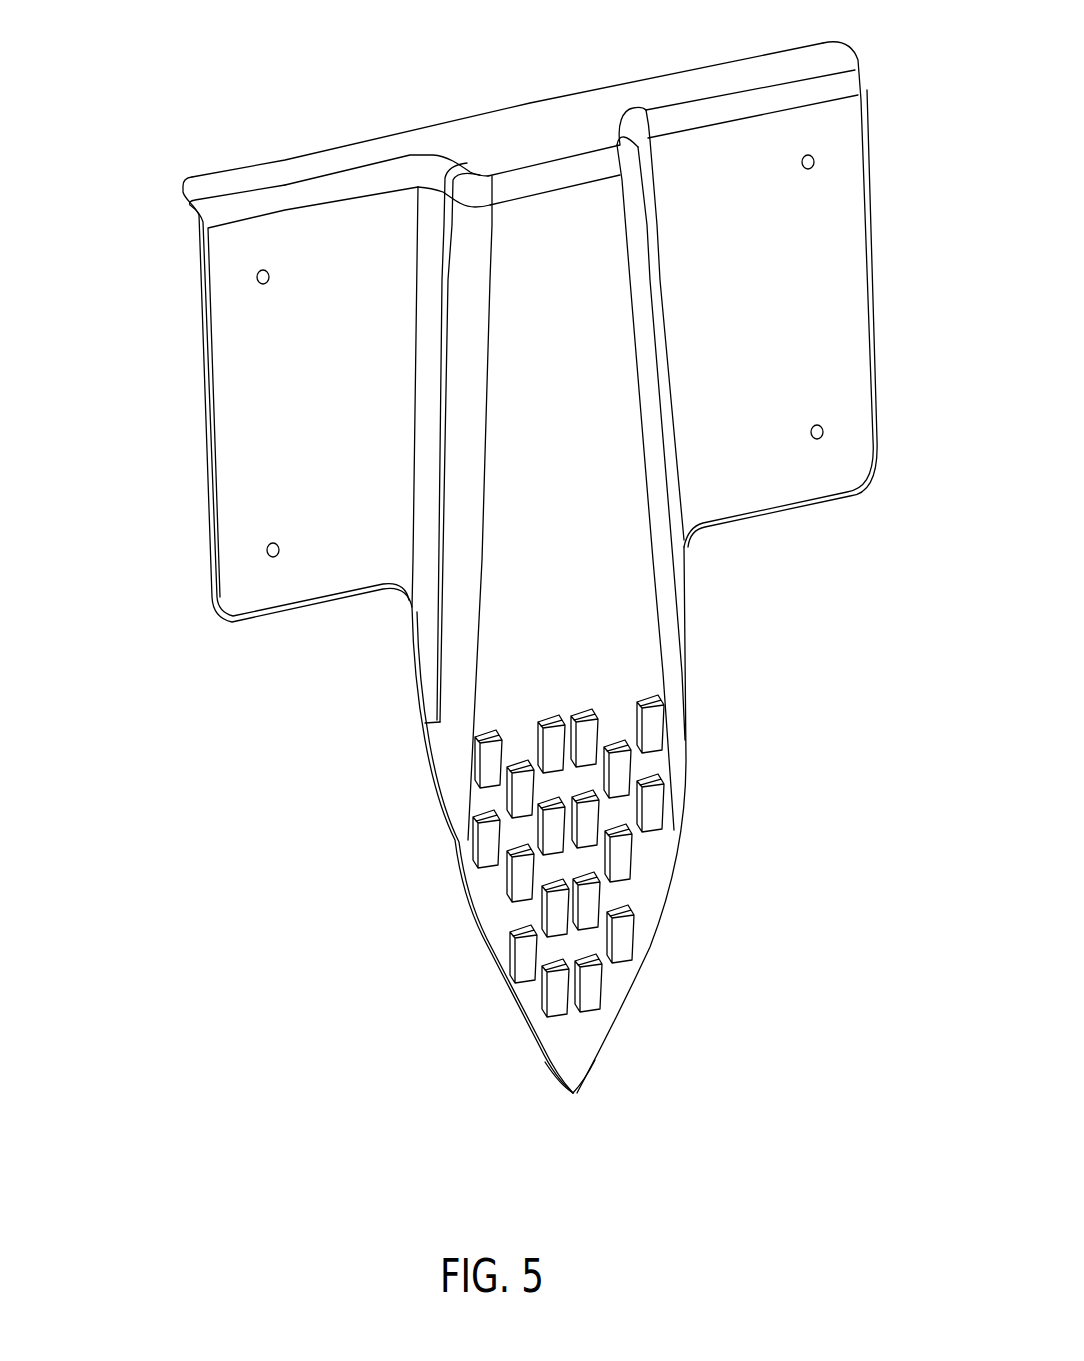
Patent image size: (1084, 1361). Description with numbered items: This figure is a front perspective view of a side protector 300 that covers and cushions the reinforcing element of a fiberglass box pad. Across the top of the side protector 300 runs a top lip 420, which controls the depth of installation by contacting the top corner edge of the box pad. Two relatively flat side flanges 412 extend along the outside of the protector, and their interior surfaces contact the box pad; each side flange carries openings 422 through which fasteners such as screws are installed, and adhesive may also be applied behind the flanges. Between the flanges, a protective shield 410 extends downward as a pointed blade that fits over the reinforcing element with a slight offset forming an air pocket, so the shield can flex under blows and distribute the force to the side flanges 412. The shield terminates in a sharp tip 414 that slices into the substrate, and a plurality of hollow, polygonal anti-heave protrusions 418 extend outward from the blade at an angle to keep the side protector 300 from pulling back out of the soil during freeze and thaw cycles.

The side protector 300 is at (499, 609).
The protective shield 410 is at (591, 647).
The side flanges 412 is at (738, 315).
The sharp tip 414 is at (577, 1094).
The anti-heave protrusions 418 is at (527, 943).
The top lip 420 is at (417, 140).
The openings 422 is at (817, 440).